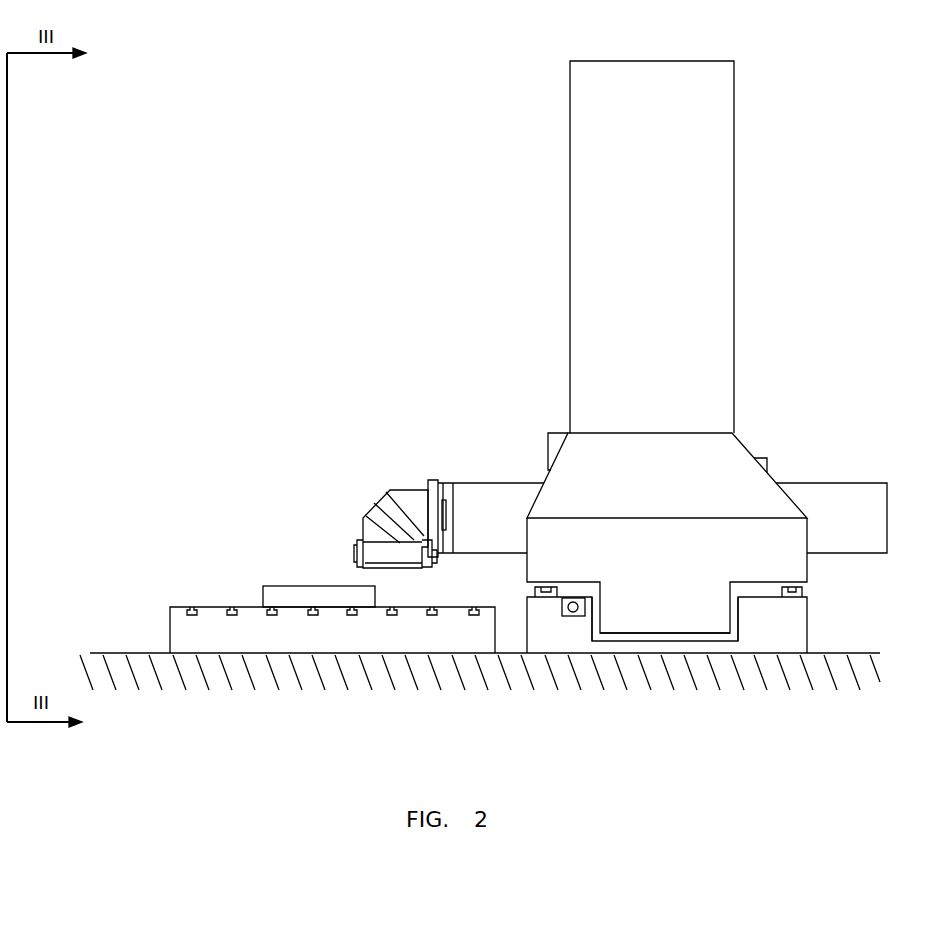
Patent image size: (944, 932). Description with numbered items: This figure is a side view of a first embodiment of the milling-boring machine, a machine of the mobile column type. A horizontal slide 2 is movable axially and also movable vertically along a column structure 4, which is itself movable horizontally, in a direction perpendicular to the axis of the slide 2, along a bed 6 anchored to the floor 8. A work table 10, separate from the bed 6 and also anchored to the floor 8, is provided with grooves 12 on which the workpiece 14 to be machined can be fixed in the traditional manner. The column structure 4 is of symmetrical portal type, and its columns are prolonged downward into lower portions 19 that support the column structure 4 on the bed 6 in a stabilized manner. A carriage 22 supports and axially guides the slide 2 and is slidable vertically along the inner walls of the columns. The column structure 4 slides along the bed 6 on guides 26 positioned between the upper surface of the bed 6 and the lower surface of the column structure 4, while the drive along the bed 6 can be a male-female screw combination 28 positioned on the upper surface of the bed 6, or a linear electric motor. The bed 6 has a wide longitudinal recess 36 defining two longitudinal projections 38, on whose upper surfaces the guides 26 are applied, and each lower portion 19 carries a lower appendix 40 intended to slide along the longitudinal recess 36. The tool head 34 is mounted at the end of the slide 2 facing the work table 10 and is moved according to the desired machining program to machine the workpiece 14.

The horizontal slide 2 is at (468, 492).
The column structure 4 is at (736, 203).
The bed 6 is at (720, 665).
The floor 8 is at (678, 668).
The work table 10 is at (332, 670).
The grooves 12 is at (313, 615).
The workpiece 14 is at (277, 592).
The lower portions 19 is at (727, 468).
The carriage 22 is at (557, 445).
The guides 26 is at (543, 592).
The male-female screw combination 28 is at (573, 607).
The tool head 34 is at (403, 500).
The longitudinal recess 36 is at (645, 638).
The longitudinal projections 38 is at (780, 622).
The lower appendix 40 is at (682, 615).